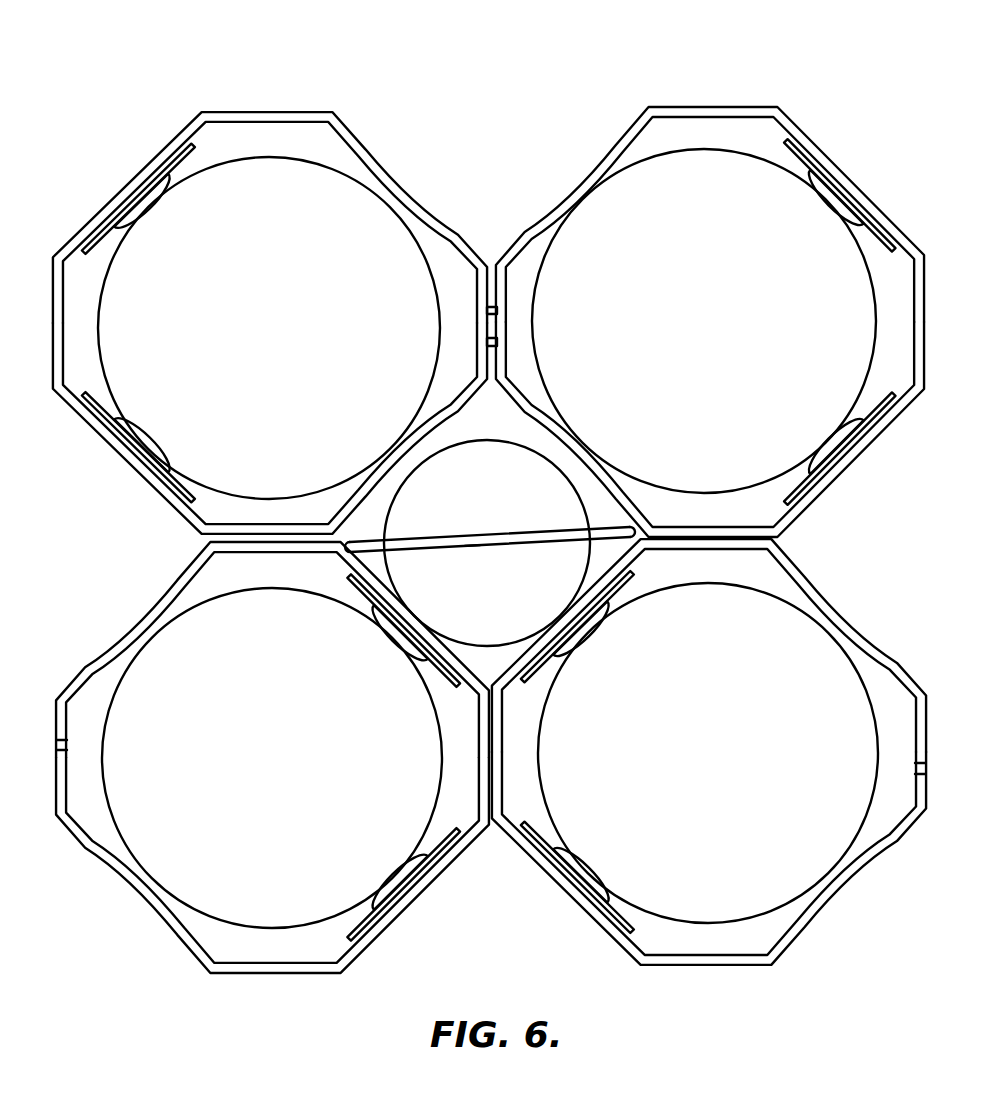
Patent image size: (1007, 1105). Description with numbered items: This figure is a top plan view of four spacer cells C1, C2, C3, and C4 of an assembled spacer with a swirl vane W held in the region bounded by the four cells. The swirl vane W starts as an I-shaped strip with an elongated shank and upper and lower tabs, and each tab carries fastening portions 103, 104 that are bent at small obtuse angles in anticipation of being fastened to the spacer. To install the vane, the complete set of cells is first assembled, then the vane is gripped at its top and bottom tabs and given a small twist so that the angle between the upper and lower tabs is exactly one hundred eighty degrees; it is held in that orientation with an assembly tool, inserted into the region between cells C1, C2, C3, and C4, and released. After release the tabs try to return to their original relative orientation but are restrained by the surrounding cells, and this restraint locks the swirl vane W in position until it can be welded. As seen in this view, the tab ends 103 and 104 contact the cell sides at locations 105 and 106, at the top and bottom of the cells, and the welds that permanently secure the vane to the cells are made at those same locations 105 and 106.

The cell C1 is at (277, 347).
The cell C2 is at (718, 345).
The cell C3 is at (297, 773).
The cell C4 is at (731, 768).
The fastening portion 103 is at (358, 538).
The fastening portion 104 is at (600, 546).
The contact location 105 is at (345, 553).
The contact location 106 is at (634, 528).
The swirl vane strip W is at (470, 547).